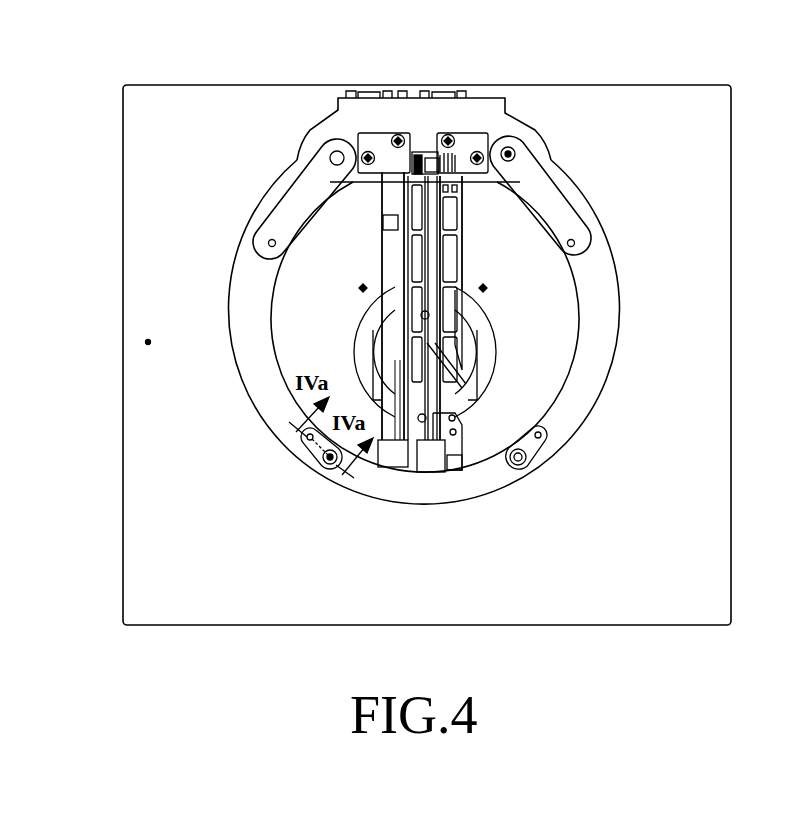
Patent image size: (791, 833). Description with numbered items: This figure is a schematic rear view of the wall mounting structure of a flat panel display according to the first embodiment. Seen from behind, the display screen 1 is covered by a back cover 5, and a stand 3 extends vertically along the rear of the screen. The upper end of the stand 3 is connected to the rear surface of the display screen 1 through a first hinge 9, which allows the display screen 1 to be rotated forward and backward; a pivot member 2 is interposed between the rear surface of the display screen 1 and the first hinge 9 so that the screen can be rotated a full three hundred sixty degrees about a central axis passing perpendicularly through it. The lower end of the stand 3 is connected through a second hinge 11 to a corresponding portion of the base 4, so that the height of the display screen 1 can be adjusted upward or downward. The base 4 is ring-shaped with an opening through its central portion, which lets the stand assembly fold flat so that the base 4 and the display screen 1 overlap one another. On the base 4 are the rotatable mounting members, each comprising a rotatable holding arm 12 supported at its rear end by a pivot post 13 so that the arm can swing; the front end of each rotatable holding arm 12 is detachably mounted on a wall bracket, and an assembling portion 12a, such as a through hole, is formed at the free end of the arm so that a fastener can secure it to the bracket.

The display screen 1 is at (648, 624).
The pivot member 2 is at (352, 357).
The stand 3 is at (380, 255).
The base 4 is at (236, 253).
The back cover 5 is at (146, 342).
The first hinge 9 is at (427, 462).
The second hinge 11 is at (393, 165).
The rotatable holding arm 12 is at (577, 222).
The assembling portion 12a is at (270, 240).
The pivot post 13 is at (515, 154).